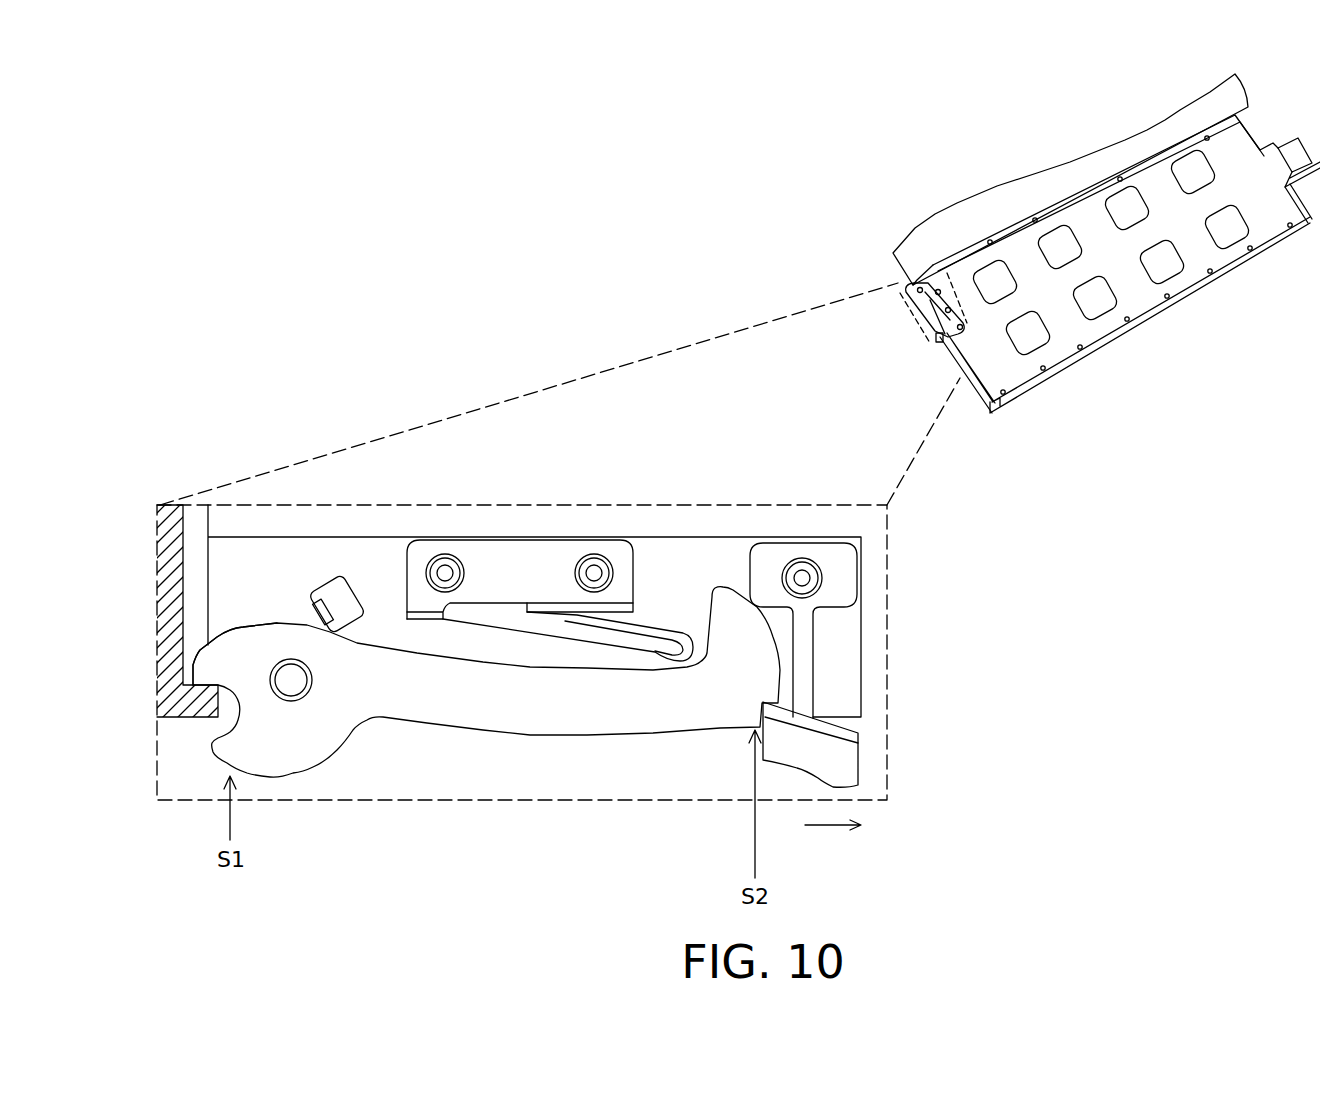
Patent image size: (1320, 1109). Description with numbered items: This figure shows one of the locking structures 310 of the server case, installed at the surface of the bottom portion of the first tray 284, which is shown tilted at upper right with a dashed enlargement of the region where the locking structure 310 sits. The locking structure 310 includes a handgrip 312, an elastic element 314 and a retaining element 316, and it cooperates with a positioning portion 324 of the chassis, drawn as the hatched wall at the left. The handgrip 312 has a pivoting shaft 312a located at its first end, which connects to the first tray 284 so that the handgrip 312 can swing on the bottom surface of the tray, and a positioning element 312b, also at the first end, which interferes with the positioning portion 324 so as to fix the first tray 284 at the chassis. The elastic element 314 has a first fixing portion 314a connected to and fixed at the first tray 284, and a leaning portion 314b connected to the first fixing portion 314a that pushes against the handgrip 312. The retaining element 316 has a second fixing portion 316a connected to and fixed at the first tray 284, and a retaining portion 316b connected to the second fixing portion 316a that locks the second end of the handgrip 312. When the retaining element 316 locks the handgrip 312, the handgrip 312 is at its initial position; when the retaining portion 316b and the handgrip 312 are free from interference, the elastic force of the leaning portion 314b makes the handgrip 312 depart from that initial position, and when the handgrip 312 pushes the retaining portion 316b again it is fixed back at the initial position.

The first tray 284 is at (1138, 308).
The locking structure 310 is at (564, 856).
The handgrip 312 is at (432, 731).
The pivoting shaft 312a is at (290, 688).
The positioning element 312b is at (235, 653).
The elastic element 314 is at (534, 560).
The first fixing portion 314a is at (477, 572).
The leaning portion 314b is at (510, 627).
The retaining element 316 is at (920, 665).
The second fixing portion 316a is at (846, 597).
The retaining portion 316b is at (892, 744).
The positioning portion 324 is at (202, 705).